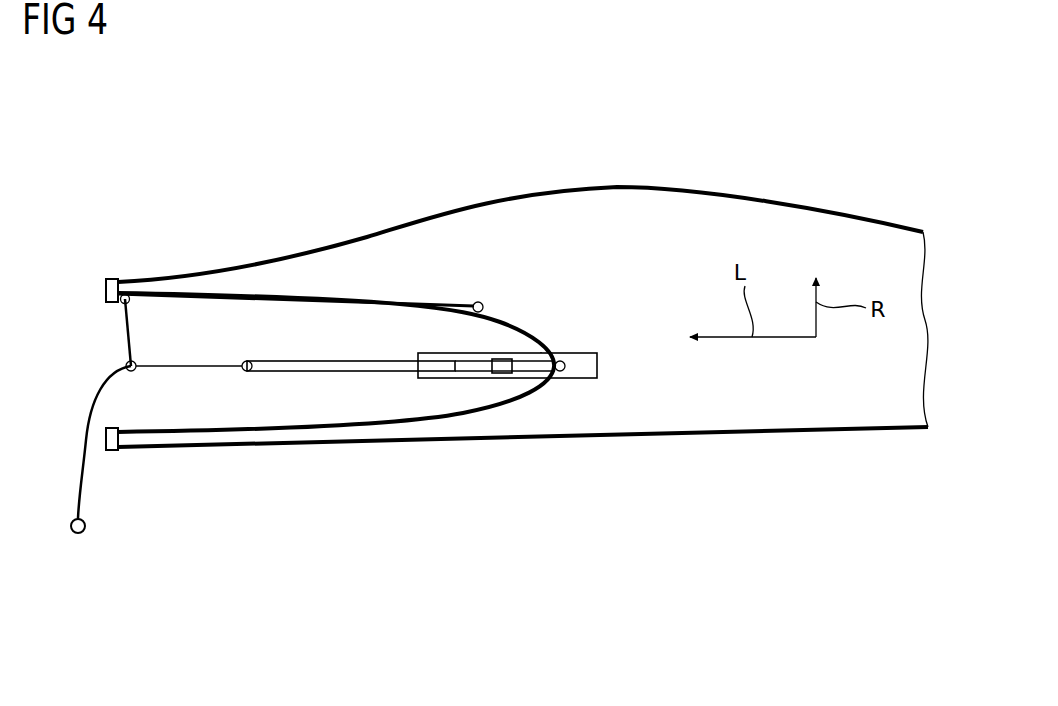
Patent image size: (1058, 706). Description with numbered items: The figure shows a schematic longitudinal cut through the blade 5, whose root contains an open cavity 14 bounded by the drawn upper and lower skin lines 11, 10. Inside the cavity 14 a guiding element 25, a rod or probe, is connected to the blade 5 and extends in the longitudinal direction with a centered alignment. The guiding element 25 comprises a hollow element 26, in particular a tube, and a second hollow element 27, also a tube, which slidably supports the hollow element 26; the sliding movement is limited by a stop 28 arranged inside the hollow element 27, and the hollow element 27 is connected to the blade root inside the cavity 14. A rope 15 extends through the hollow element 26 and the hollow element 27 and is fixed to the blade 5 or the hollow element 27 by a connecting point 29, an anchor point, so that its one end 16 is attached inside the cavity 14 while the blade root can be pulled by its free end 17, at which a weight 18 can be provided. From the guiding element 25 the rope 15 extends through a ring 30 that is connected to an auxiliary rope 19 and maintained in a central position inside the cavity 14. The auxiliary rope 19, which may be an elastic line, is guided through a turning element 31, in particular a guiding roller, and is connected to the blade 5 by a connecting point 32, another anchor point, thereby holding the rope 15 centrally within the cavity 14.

The blade 5 is at (426, 163).
The lower skin 10 is at (738, 437).
The upper skin 11 is at (705, 186).
The open cavity 14 is at (216, 297).
The rope 15 is at (71, 466).
The one end of rope 16 is at (541, 352).
The free end of rope 17 is at (86, 517).
The weight 18 is at (86, 529).
The auxiliary rope 19 is at (270, 290).
The guiding element 25 is at (325, 392).
The hollow element 26 is at (388, 378).
The hollow element 27 is at (463, 378).
The stop 28 is at (505, 378).
The connecting point 29 is at (567, 365).
The ring 30 is at (125, 366).
The turning element 31 is at (122, 283).
The connecting point 32 is at (479, 301).